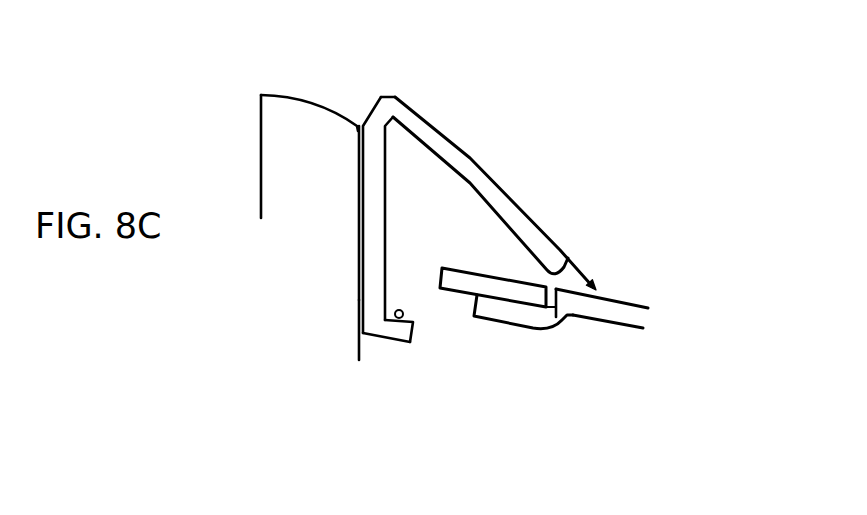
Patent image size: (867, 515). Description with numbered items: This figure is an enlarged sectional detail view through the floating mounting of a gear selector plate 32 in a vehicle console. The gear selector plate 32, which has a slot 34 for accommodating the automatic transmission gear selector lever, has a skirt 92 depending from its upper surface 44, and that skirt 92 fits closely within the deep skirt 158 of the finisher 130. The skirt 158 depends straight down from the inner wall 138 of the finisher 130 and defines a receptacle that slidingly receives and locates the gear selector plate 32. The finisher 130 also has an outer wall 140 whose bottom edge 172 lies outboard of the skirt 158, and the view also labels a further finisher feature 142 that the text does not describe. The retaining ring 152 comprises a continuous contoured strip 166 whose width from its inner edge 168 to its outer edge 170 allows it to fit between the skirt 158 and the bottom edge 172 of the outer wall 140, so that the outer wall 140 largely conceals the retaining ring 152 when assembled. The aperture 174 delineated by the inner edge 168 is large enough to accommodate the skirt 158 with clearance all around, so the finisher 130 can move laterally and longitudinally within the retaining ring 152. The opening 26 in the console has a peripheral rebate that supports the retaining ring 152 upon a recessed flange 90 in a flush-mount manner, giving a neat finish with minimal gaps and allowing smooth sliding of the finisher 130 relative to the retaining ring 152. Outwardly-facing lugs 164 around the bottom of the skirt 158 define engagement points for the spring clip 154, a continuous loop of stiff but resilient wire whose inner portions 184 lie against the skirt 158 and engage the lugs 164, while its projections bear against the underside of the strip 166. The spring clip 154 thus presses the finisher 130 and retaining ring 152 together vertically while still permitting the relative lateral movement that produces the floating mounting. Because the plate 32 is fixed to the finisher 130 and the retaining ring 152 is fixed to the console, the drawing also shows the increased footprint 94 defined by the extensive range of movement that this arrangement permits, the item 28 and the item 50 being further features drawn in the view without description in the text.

The opening 26 is at (453, 303).
The flange 28 is at (635, 315).
The gear selector plate 32 is at (283, 147).
The slot 34 is at (227, 133).
The upper surface 44 is at (312, 100).
The base plate 50 is at (617, 300).
The recessed flange 90 is at (530, 313).
The skirt 92 is at (357, 348).
The footprint 94 is at (578, 283).
The finisher 130 is at (430, 128).
The inner wall 138 is at (373, 183).
The outer wall 140 is at (460, 272).
The apex 142 is at (395, 108).
The retaining ring 152 is at (530, 228).
The spring clip 154 is at (407, 342).
The skirt 158 is at (373, 303).
The lugs 164 is at (380, 340).
The strip 166 is at (495, 300).
The inner edge 168 is at (445, 270).
The outer edge 170 is at (563, 302).
The bottom edge 172 is at (563, 260).
The aperture 174 is at (412, 272).
The inner portions 184 is at (397, 322).